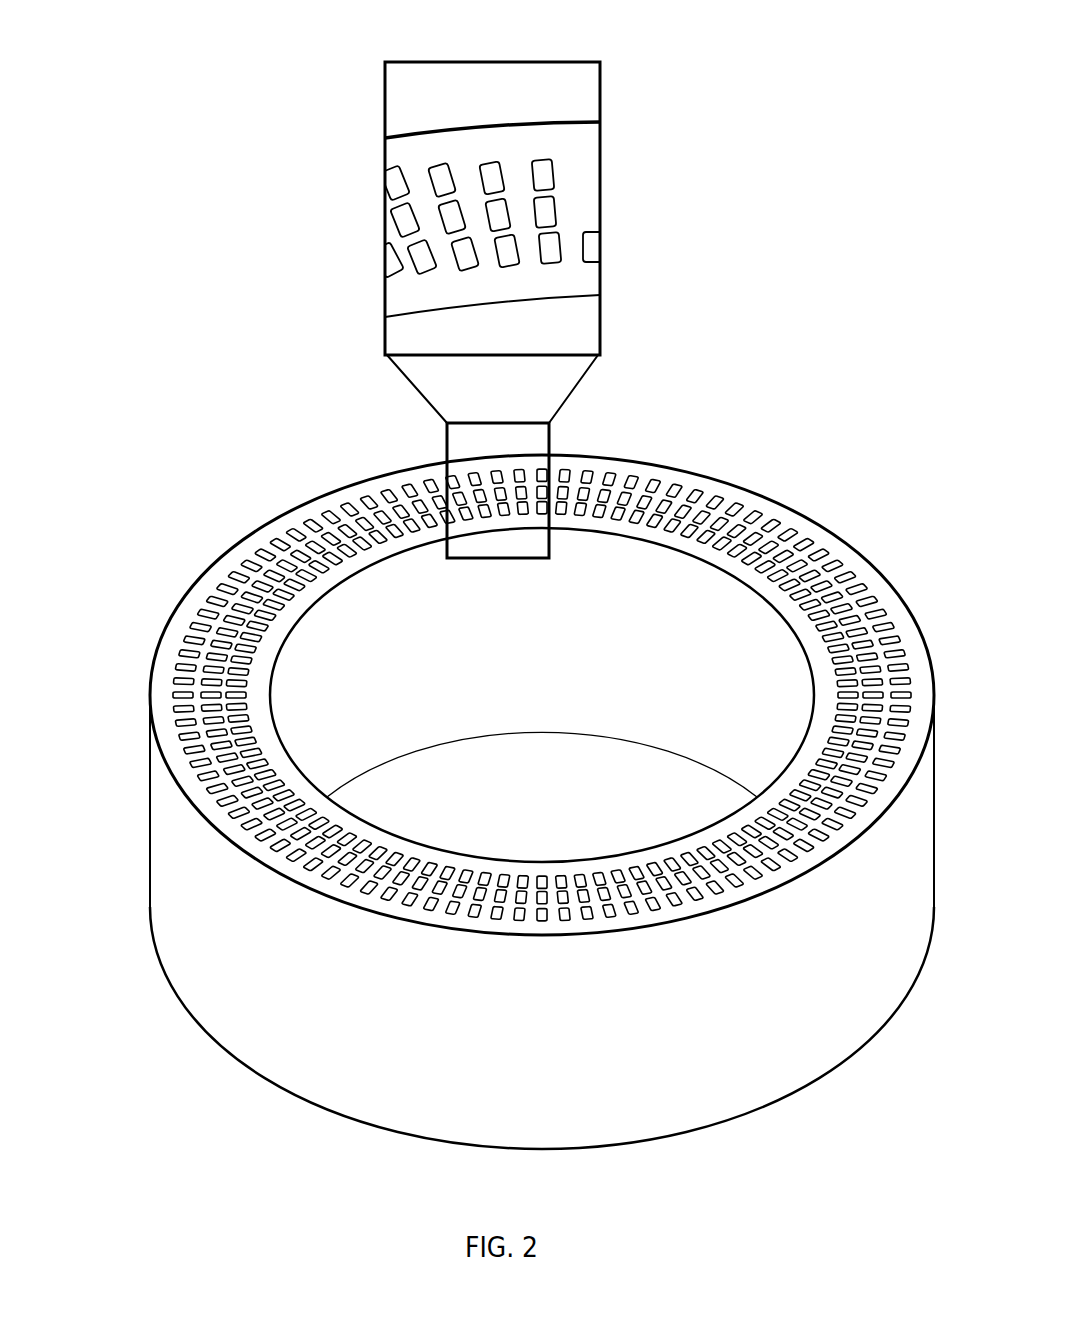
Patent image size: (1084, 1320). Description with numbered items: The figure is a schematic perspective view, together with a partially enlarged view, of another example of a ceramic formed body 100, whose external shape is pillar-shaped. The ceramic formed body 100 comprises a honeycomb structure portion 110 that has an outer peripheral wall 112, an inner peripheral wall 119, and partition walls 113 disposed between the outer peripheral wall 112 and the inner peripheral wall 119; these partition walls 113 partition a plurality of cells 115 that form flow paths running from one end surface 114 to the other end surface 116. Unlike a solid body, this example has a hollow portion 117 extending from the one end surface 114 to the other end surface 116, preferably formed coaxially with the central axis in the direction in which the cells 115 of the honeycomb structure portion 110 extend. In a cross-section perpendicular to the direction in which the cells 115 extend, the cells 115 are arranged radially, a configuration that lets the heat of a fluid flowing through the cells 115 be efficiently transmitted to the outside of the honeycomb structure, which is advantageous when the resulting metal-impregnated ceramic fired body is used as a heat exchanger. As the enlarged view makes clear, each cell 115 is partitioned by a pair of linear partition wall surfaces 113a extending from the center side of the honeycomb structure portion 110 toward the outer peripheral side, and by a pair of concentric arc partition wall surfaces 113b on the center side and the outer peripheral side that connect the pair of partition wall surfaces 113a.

The ceramic formed body 100 is at (511, 770).
The honeycomb structure portion 110 is at (498, 770).
The outer peripheral wall 112 is at (197, 583).
The partition walls 113 is at (516, 284).
The partition wall surfaces 113a is at (582, 176).
The partition wall surfaces 113b is at (552, 263).
The one end surface 114 is at (287, 522).
The cells 115 is at (596, 210).
The other end surface 116 is at (278, 1088).
The hollow portion 117 is at (609, 567).
The inner peripheral wall 119 is at (400, 728).